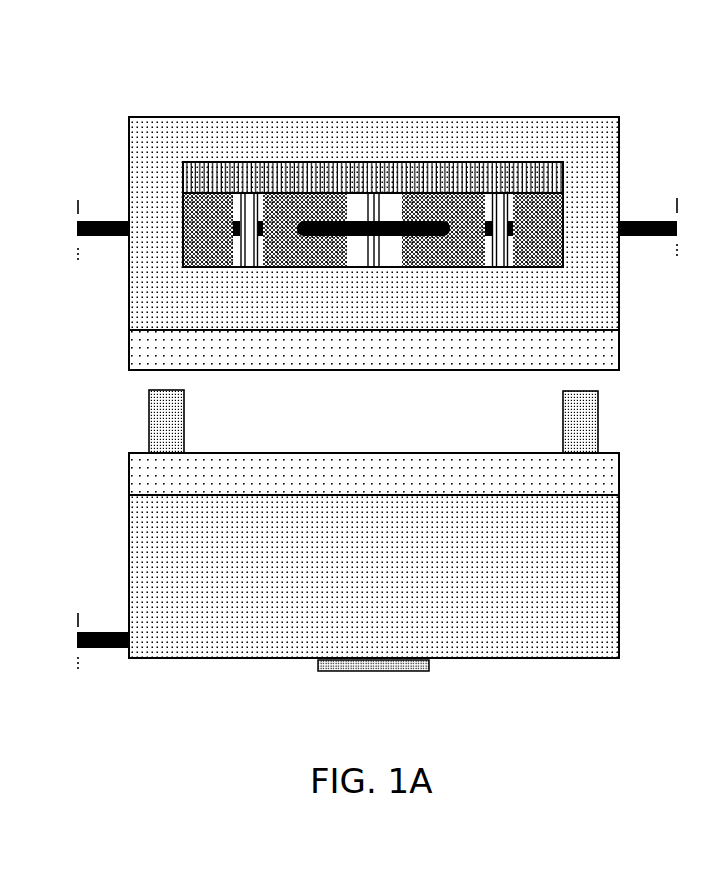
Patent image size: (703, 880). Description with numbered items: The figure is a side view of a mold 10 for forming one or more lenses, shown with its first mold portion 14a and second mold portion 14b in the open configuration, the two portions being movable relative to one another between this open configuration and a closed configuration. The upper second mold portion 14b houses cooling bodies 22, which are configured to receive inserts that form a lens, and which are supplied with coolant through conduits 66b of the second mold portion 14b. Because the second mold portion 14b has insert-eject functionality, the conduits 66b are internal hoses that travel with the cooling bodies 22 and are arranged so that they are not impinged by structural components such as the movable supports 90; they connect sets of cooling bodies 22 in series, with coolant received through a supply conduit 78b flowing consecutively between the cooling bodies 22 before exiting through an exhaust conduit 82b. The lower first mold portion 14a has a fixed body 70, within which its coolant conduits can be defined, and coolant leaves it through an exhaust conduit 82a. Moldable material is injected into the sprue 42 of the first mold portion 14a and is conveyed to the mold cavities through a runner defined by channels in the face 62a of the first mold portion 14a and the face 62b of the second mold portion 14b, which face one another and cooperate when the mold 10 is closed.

The mold 10 is at (138, 51).
The first mold portion 14a is at (188, 648).
The second mold portion 14b is at (388, 122).
The cooling bodies 22 is at (443, 205).
The sprue 42 is at (375, 672).
The face of first mold portion 62a is at (140, 457).
The face of second mold portion 62b is at (597, 373).
The conduits of second mold portion 66b is at (338, 218).
The fixed body 70 is at (378, 580).
The supply conduit 78b is at (103, 220).
The exhaust conduit 82a is at (102, 648).
The exhaust conduit 82b is at (652, 220).
The movable supports 90 is at (500, 206).